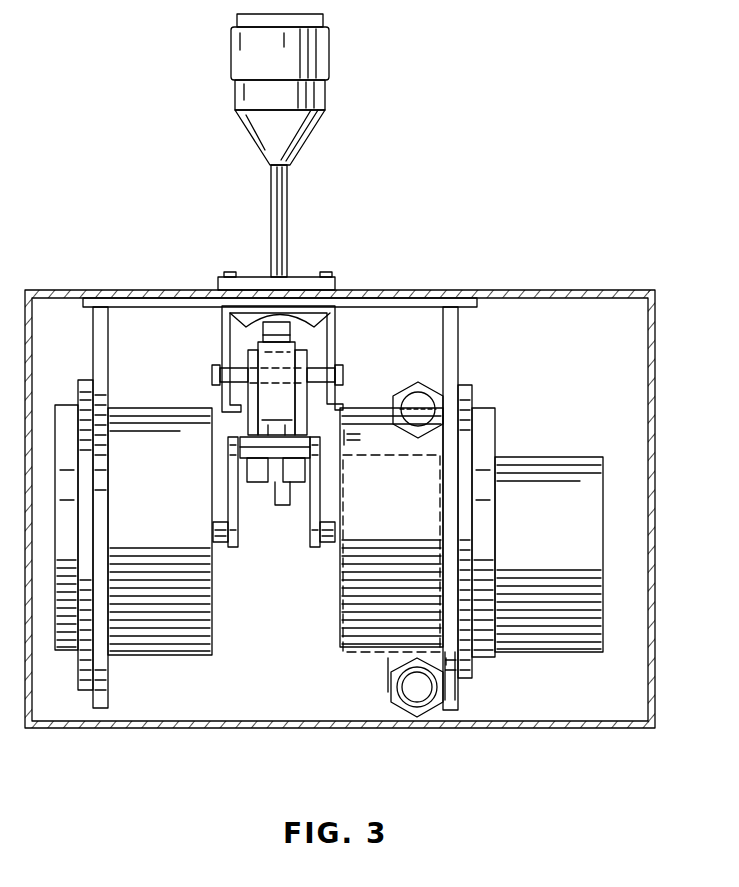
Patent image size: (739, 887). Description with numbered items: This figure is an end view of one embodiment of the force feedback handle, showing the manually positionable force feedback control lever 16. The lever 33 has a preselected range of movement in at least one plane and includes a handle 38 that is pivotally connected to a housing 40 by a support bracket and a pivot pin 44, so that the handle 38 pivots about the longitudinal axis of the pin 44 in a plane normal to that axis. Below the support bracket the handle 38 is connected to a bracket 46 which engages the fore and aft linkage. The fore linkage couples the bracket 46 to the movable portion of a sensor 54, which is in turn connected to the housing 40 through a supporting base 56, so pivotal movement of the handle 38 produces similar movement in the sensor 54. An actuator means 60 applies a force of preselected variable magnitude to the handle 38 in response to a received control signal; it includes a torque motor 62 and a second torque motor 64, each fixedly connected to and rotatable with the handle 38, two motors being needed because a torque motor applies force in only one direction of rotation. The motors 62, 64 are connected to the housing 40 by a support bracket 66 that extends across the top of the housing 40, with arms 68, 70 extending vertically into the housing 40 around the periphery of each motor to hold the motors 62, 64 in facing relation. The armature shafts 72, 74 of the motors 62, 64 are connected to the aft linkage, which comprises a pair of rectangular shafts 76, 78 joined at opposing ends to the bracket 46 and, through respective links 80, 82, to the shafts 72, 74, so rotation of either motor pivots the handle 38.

The force feedback control lever 16 is at (524, 134).
The manually positionable lever 33 is at (364, 87).
The handle 38 is at (312, 140).
The housing 40 is at (657, 318).
The pivot pin 44 is at (342, 370).
The bracket 46 is at (310, 408).
The sensor 54 is at (530, 531).
The supporting base 56 is at (389, 692).
The actuator means 60 is at (325, 684).
The torque motor 62 is at (133, 535).
The second torque motor 64 is at (391, 530).
The support bracket 66 is at (415, 296).
The arm 68 is at (462, 327).
The arm 70 is at (108, 330).
The armature shaft 72 is at (218, 537).
The armature shaft 74 is at (332, 548).
The rectangular shaft 76 is at (262, 485).
The rectangular shaft 78 is at (300, 485).
The link 80 is at (232, 464).
The link 82 is at (322, 482).